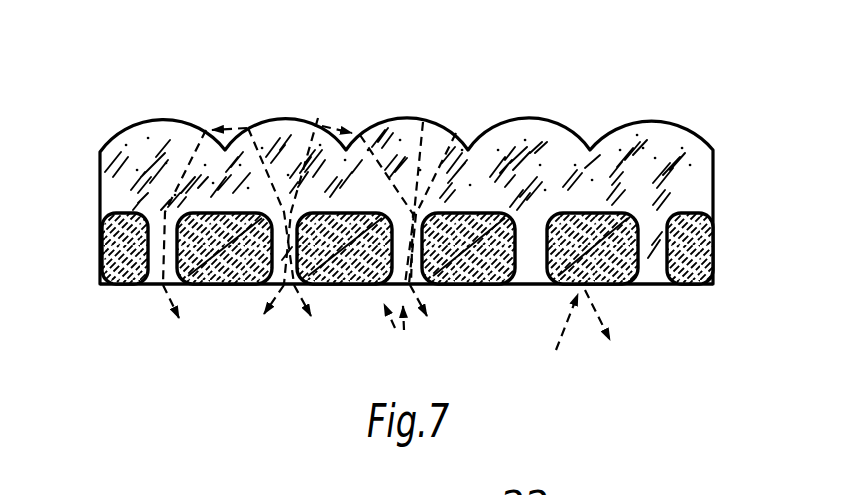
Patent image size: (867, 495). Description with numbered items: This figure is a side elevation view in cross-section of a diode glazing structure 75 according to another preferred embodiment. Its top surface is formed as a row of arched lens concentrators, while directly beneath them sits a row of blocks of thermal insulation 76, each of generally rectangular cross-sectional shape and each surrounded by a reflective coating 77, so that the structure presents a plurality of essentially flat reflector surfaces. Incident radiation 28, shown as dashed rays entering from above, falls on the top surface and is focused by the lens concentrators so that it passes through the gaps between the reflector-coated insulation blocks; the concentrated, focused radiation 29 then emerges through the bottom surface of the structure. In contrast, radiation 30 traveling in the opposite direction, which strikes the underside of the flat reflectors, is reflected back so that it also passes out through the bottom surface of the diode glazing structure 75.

The diode glazing structure 75 is at (172, 82).
The blocks of thermal insulation 76 is at (220, 287).
The reflective coating 77 is at (92, 274).
The incident radiation 28 is at (250, 122).
The focused radiation 29 is at (170, 303).
The radiation in the opposite direction 30 is at (583, 326).